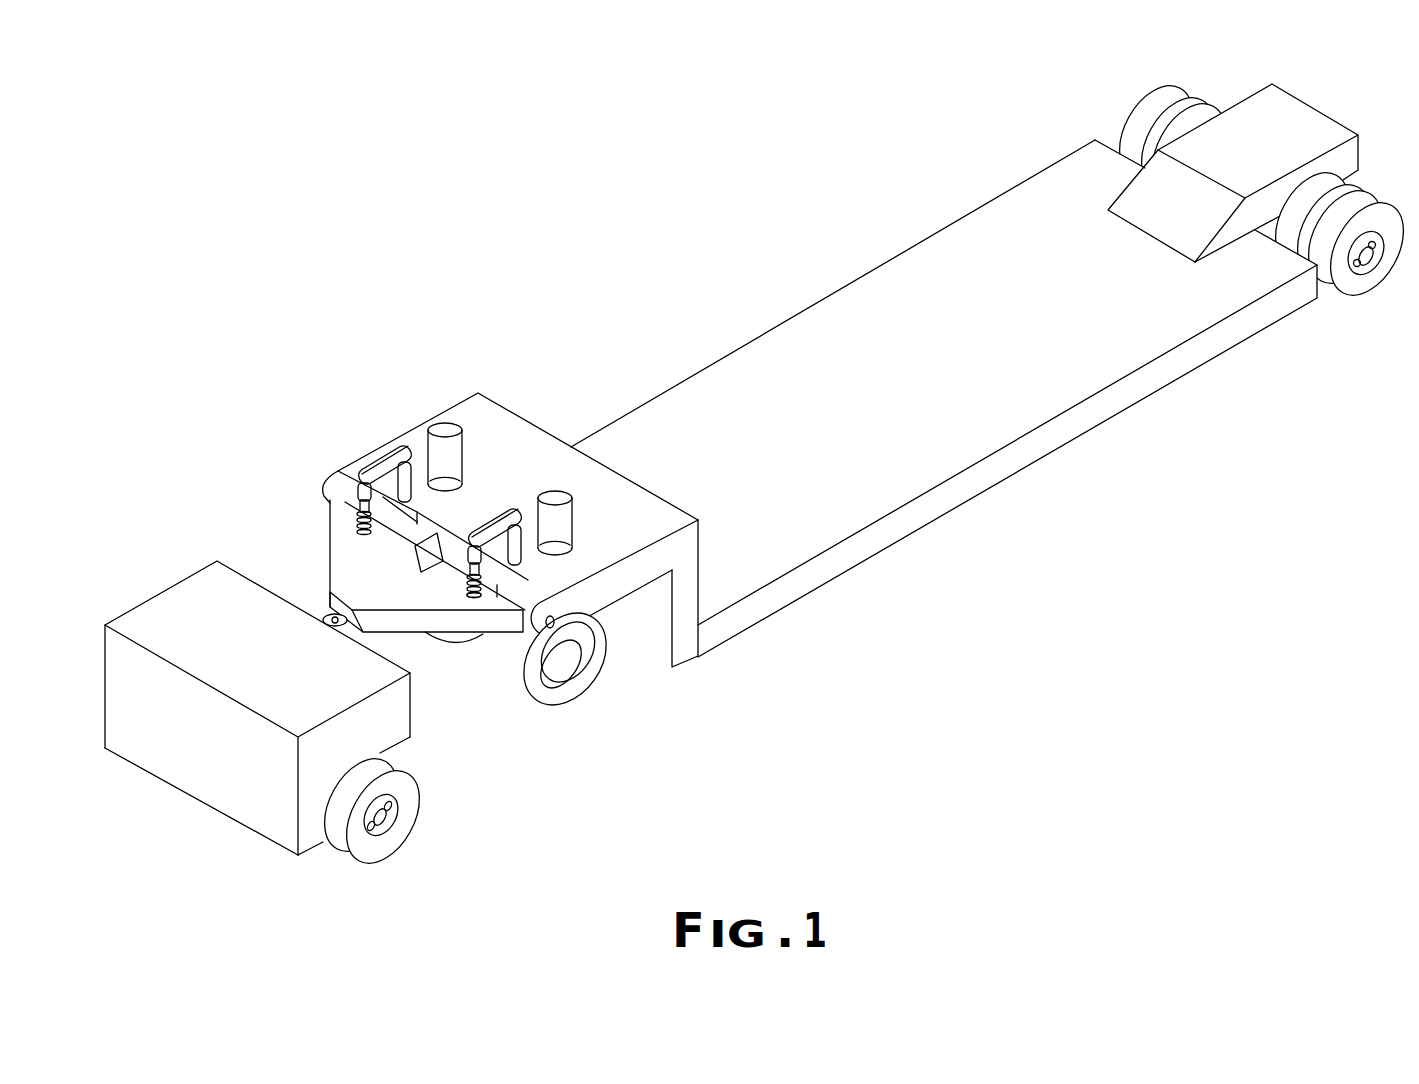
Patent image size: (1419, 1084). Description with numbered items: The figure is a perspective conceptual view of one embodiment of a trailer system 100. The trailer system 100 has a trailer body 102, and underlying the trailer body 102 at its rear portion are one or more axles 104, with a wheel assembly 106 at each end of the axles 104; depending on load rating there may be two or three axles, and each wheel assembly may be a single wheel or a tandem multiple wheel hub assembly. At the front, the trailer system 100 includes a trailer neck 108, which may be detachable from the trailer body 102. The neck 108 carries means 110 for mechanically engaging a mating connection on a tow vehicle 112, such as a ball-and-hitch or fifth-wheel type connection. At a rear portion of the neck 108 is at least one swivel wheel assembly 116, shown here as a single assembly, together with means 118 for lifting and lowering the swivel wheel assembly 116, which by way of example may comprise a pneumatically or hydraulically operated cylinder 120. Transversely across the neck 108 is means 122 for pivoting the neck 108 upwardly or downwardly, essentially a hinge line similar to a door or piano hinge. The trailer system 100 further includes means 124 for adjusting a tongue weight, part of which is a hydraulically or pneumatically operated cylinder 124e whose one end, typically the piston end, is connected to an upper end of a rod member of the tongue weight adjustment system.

The trailer system 100 is at (583, 312).
The trailer body 102 is at (915, 402).
The axle 104 is at (1367, 258).
The wheel assembly 106 is at (1092, 80).
The trailer neck 108 is at (683, 650).
The means for mechanically engaging a mating connection on a tow vehicle 110 is at (313, 583).
The tow vehicle 112 is at (277, 655).
The swivel wheel assembly 116 is at (450, 638).
The means for lifting and lowering the swivel wheel assembly 118 is at (482, 419).
The cylinder 120 is at (448, 457).
The means for pivoting the neck upwardly or downwardly 122 is at (517, 600).
The means for adjusting a tongue weight 124 is at (340, 435).
The cylinder 124e is at (470, 560).